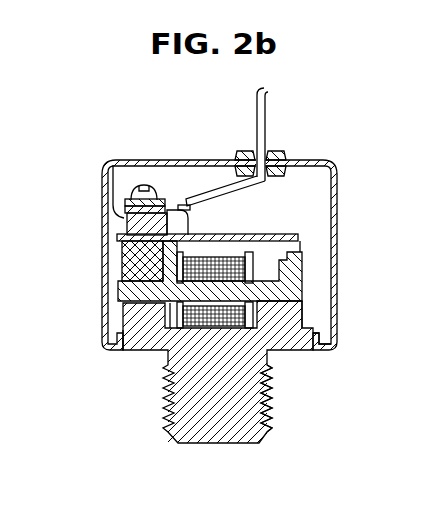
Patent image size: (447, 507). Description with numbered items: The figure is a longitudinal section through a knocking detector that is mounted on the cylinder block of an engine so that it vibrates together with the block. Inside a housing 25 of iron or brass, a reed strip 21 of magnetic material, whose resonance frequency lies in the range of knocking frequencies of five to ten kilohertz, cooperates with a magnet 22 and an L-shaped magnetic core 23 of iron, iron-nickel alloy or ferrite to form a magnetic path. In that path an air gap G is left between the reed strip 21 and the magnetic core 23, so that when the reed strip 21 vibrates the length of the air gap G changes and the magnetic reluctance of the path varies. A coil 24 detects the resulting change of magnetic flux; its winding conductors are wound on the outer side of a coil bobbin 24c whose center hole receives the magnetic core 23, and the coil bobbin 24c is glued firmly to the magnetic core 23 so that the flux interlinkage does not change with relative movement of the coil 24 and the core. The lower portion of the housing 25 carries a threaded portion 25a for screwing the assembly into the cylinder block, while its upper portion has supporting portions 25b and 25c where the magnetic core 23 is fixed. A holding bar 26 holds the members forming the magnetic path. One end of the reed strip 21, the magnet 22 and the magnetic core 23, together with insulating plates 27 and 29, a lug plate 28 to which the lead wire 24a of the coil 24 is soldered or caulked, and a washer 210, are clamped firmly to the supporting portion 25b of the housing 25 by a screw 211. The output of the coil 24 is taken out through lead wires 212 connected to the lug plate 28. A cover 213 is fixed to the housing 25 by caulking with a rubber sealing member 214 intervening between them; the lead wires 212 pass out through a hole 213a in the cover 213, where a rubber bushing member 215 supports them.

The reed strip 21 is at (254, 231).
The magnet 22 is at (127, 265).
The magnetic core 23 is at (297, 290).
The coil 24 is at (240, 322).
The lead wire of the coil 24a is at (191, 216).
The coil bobbin 24c is at (170, 327).
The housing 25 is at (247, 440).
The threaded portion 25a is at (275, 410).
The supporting portion 25b is at (122, 345).
The supporting portion 25c is at (297, 315).
The holding bar 26 is at (124, 229).
The insulating plate 27 is at (122, 218).
The lug plate 28 is at (113, 165).
The insulating plate 29 is at (179, 204).
The air gap G is at (303, 243).
The washer 210 is at (128, 191).
The screw 211 is at (153, 188).
The lead wires 212 is at (268, 96).
The cover 213 is at (337, 192).
The hole 213a is at (278, 151).
The sealing member 214 is at (327, 348).
The rubber bushing member 215 is at (242, 152).